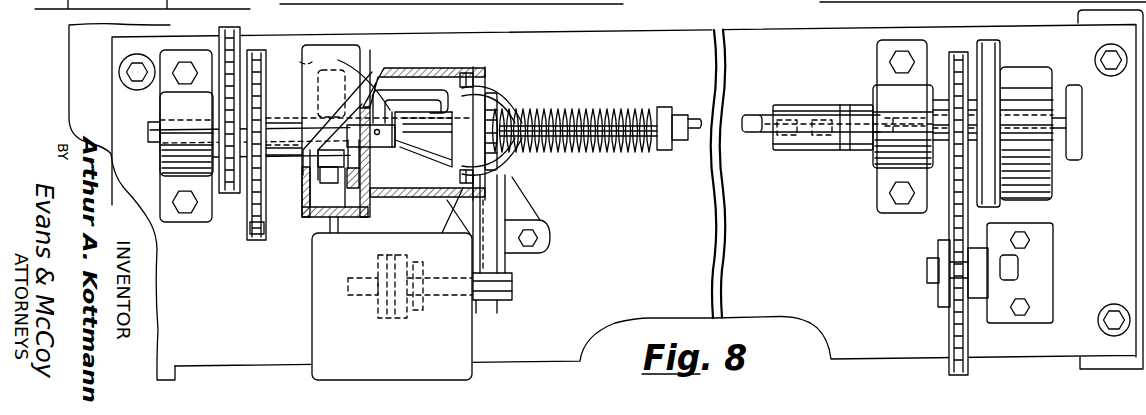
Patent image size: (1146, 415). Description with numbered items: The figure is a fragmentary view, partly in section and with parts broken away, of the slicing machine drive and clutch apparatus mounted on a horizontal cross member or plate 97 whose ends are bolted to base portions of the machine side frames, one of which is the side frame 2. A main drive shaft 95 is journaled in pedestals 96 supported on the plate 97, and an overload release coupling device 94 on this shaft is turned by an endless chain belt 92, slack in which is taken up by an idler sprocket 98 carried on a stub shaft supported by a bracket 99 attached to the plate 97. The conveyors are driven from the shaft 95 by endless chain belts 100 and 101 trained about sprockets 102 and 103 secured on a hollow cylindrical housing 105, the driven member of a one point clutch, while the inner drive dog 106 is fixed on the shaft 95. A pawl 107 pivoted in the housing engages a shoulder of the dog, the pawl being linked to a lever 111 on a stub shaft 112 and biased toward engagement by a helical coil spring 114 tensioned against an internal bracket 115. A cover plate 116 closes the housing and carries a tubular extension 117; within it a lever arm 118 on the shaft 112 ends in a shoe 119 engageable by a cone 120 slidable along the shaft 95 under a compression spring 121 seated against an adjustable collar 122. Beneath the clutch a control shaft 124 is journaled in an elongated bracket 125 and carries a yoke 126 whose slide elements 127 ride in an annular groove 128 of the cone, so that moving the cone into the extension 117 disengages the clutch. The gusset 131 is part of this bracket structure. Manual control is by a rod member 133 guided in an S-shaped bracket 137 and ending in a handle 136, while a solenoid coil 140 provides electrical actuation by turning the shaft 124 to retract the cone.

The side frame 2 is at (75, 58).
The endless chain belt 92 is at (950, 338).
The coupling device 94 is at (924, 192).
The main drive shaft 95 is at (158, 150).
The pedestal 96 is at (162, 214).
The cross member or plate 97 is at (650, 282).
The idler sprocket 98 is at (935, 294).
The bracket 99 is at (1045, 262).
The endless chain belt 100 is at (222, 30).
The endless chain belt 101 is at (248, 232).
The sprocket 102 is at (230, 132).
The sprocket 103 is at (252, 212).
The hollow cylindrical housing 105 is at (330, 235).
The drive dog 106 is at (303, 108).
The pawl 107 is at (325, 207).
The lever 111 is at (300, 62).
The stub shaft 112 is at (442, 103).
The helical coil spring 114 is at (334, 222).
The internal bracket 115 is at (358, 216).
The cover plate 116 is at (368, 167).
The tubular extension 117 is at (468, 70).
The lever arm 118 is at (346, 126).
The shoe 119 is at (402, 90).
The cone 120 is at (450, 154).
The compression spring 121 is at (642, 107).
The adjustable collar 122 is at (665, 152).
The control shaft 124 is at (493, 303).
The elongated bracket 125 is at (538, 223).
The yoke 126 is at (522, 98).
The slide elements 127 is at (492, 88).
The annular channel or groove 128 is at (440, 88).
The gusset 131 is at (466, 239).
The rod member 133 is at (738, 132).
The handle 136 is at (1085, 140).
The S-shaped bracket 137 is at (818, 110).
The solenoid coil 140 is at (312, 332).